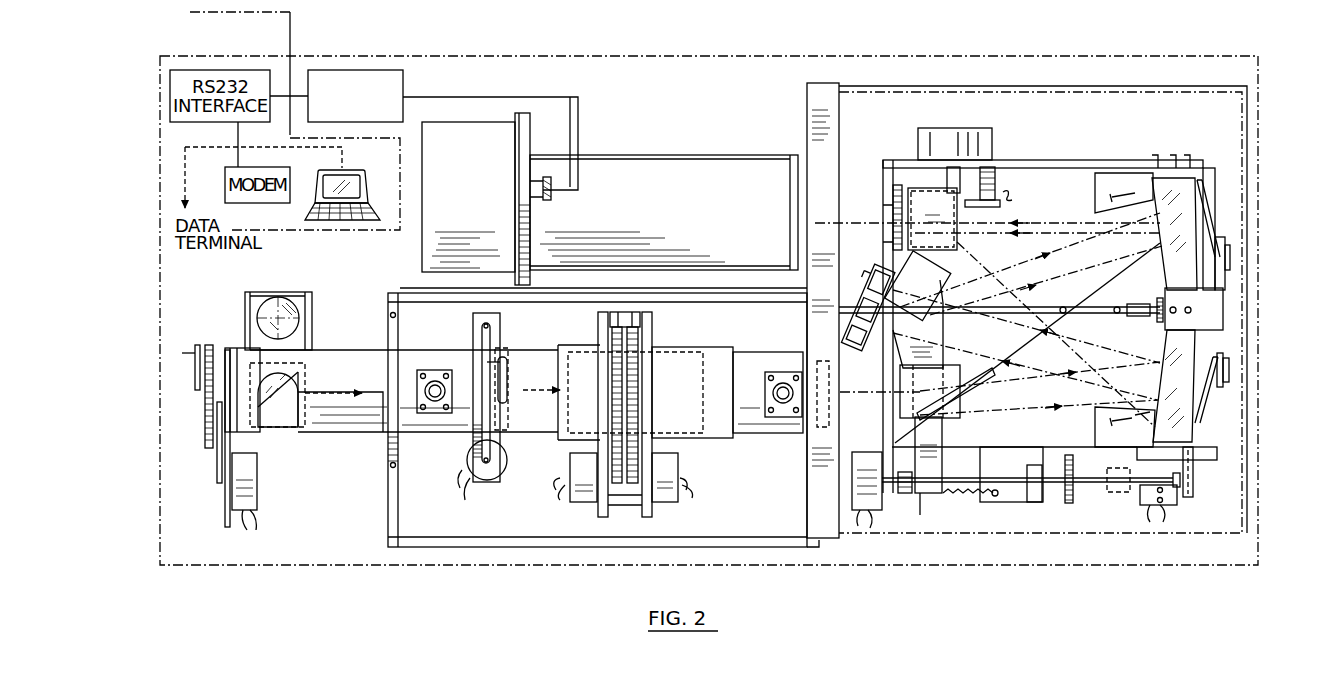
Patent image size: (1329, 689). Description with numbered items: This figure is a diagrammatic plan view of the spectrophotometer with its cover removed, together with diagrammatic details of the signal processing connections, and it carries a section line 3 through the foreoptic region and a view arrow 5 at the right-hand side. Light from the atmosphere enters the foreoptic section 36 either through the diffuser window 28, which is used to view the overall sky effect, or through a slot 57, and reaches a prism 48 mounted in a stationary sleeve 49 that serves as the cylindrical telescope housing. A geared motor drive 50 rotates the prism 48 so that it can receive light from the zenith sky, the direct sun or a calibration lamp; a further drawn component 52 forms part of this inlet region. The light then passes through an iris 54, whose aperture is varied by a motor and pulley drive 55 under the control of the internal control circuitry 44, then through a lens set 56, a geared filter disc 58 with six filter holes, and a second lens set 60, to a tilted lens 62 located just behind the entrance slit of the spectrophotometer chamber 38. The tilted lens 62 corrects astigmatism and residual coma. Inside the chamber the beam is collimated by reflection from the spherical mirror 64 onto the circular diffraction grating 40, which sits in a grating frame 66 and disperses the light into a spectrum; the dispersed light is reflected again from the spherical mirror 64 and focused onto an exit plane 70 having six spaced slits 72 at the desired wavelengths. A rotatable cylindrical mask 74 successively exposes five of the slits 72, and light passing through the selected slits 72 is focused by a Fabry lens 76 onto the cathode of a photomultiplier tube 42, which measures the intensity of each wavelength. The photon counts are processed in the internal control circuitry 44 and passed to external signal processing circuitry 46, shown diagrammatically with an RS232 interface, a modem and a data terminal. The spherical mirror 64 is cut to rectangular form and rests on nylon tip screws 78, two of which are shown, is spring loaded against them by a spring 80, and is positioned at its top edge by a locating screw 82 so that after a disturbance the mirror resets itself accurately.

The section line 3- 3 is at (275, 270).
The view arrow 5 is at (1278, 292).
The diffuser window 28 is at (296, 303).
The foreoptic section 36 is at (520, 503).
The spectrophotometer chamber 38 is at (1014, 520).
The circular diffraction grating 40 is at (913, 292).
The photomultiplier tube 42 is at (663, 154).
The internal control circuitry 44 is at (390, 70).
The external signal processing circuitry 46 is at (292, 43).
The prism 48 is at (262, 407).
The stationary sleeve 49 is at (335, 348).
The geared motor drive 50 is at (192, 466).
The lamp lens 52 is at (300, 325).
The iris 54 is at (511, 335).
The motor and pulley drive 55 is at (458, 442).
The lens set 56 is at (575, 352).
The slot 57 is at (300, 381).
The filter disc 58 is at (660, 330).
The second lens set 60 is at (695, 432).
The tilted lens 62 is at (968, 414).
The spherical mirror 64 is at (1188, 342).
The grating frame 66 is at (865, 316).
The exit plane 70 is at (905, 188).
The slits 72 is at (892, 197).
The rotatable cylindrical mask 74 is at (958, 240).
The Fabry lens 76 is at (838, 158).
The nylon tip screws 78 is at (1152, 178).
The spring 80 is at (1205, 203).
The locating screw 82 is at (1157, 298).